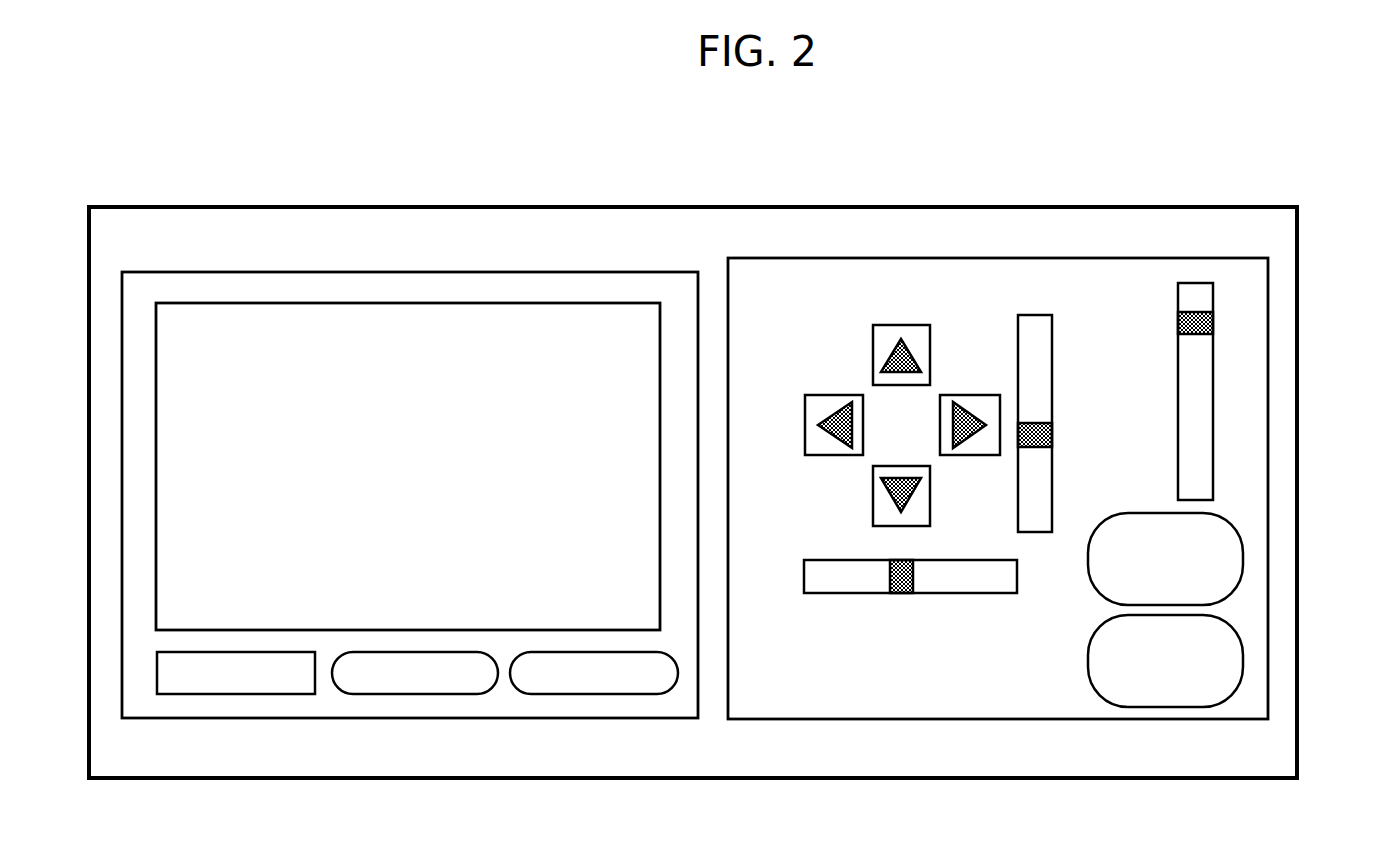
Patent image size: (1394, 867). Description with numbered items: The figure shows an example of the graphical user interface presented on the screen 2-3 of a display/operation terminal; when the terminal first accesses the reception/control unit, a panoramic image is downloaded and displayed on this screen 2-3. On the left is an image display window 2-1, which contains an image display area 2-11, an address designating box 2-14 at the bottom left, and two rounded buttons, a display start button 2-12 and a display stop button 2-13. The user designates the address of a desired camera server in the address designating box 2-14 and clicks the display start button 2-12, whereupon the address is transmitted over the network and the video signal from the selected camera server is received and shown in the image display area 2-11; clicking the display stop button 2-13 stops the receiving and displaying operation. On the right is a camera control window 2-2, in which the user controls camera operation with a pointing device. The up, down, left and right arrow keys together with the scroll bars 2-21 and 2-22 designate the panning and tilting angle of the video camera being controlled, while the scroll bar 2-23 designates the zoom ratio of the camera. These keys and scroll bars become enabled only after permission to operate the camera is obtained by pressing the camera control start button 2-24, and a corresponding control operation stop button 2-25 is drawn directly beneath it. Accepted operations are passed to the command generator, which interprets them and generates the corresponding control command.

The image display window 2-1 is at (429, 282).
The image display area 2-11 is at (623, 330).
The display start button 2-12 is at (437, 695).
The display stop button 2-13 is at (618, 695).
The address designating box 2-14 is at (226, 695).
The camera control window 2-2 is at (909, 280).
The scroll bar 2-21 is at (1034, 313).
The scroll bar 2-22 is at (938, 595).
The scroll bar 2-23 is at (1213, 323).
The camera control start button 2-24 is at (1243, 551).
The control operation stop button 2-25 is at (1243, 654).
The screen 2-3 is at (929, 750).